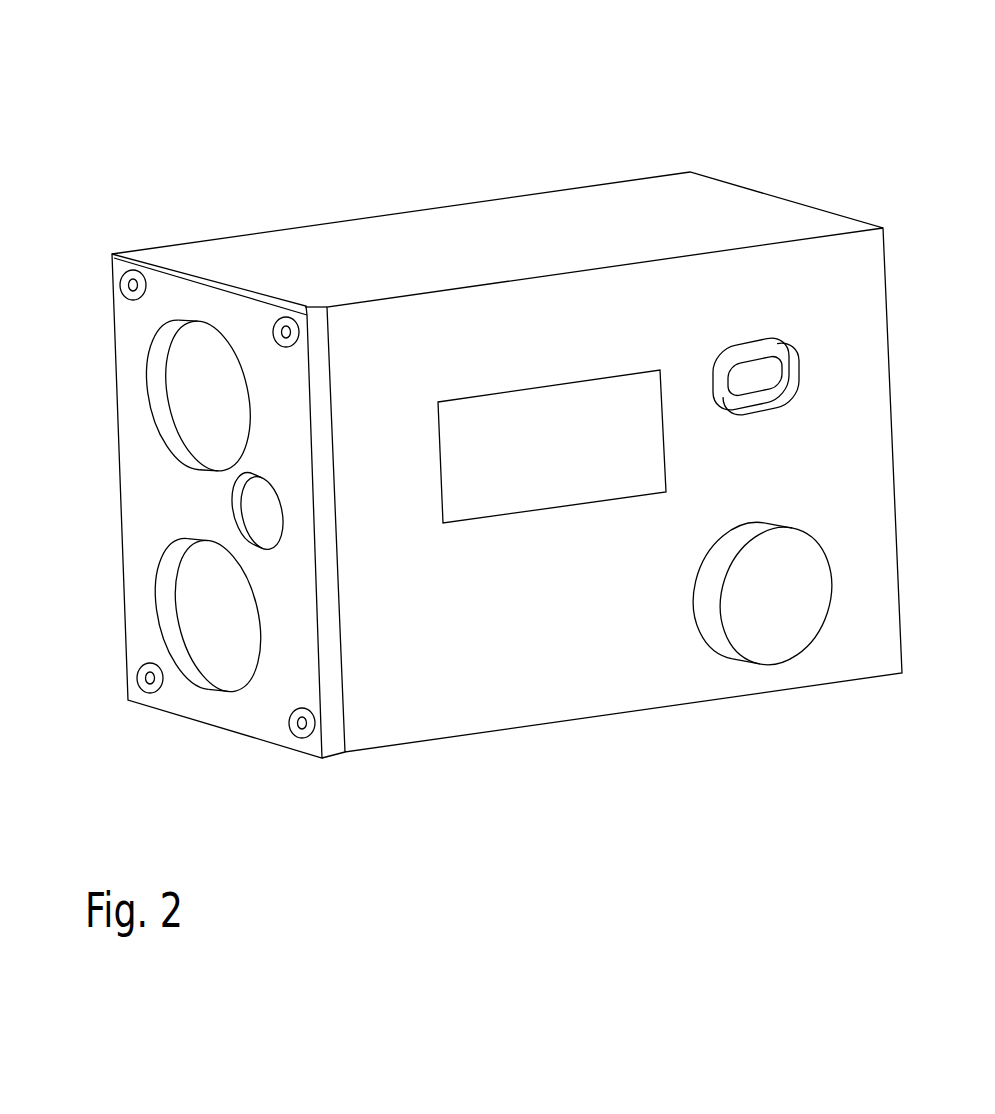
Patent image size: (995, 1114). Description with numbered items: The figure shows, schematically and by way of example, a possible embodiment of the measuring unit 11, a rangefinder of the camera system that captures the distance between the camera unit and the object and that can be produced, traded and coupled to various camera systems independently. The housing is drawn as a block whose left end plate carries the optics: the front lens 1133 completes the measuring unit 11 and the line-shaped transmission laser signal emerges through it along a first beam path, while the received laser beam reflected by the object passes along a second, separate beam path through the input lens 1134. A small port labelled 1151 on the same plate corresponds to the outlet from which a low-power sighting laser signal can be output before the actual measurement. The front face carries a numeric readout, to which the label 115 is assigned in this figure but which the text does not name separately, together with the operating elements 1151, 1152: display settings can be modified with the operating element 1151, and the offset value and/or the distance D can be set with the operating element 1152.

The measuring unit 11 is at (856, 68).
The display 115 is at (582, 490).
The front lens 1133 is at (193, 407).
The input lens 1134 is at (198, 607).
The operating element 1151 is at (267, 511).
The operating element 1152 is at (773, 617).